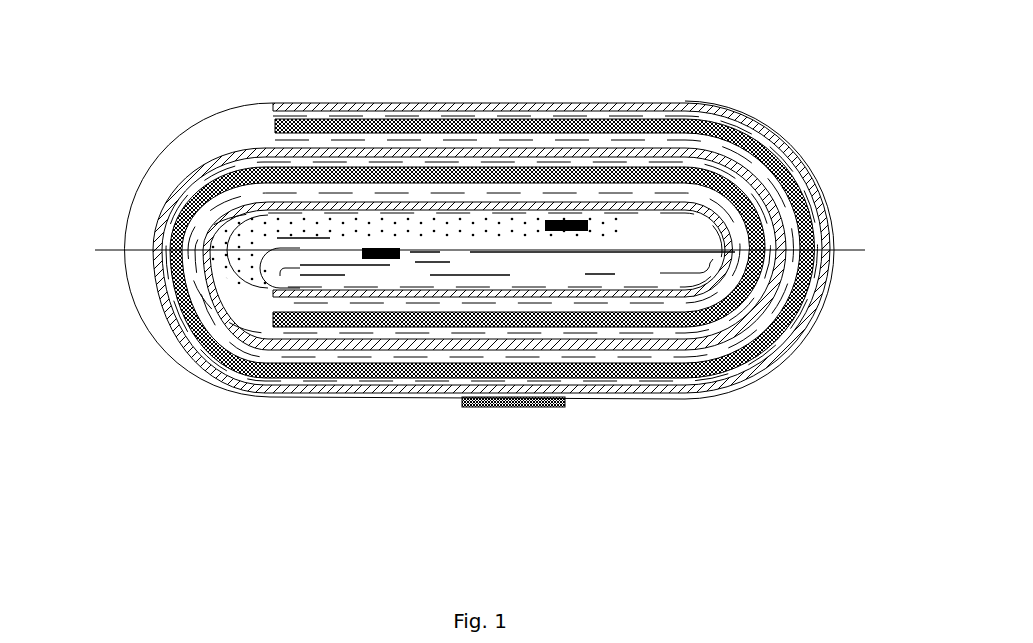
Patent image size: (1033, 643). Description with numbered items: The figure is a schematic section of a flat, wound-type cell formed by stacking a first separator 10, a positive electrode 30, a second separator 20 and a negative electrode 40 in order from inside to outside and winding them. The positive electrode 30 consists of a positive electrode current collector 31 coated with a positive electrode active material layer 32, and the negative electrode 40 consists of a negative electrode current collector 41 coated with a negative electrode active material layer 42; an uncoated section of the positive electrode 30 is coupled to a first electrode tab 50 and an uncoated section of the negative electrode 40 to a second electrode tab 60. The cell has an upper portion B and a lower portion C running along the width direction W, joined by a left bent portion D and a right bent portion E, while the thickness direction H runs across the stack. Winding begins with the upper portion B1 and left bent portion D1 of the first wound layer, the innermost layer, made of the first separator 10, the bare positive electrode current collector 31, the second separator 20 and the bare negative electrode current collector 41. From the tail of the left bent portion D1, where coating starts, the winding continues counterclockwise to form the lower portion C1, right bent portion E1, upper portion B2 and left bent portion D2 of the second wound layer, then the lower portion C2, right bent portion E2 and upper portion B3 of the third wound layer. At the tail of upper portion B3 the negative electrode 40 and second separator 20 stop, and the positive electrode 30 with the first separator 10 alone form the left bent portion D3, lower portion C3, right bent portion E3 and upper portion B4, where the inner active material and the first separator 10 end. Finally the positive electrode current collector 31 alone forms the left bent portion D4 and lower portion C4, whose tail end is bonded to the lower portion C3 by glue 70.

The first separator 10 is at (578, 216).
The second separator 20 is at (505, 206).
The positive electrode 30 is at (456, 213).
The positive electrode current collector 31 is at (300, 287).
The positive electrode active material layer 32 is at (320, 290).
The negative electrode 40 is at (511, 243).
The negative electrode current collector 41 is at (780, 148).
The negative electrode active material layer 42 is at (763, 268).
The first electrode tab 50 is at (370, 252).
The second electrode tab 60 is at (571, 233).
The glue 70 is at (510, 408).
The upper portion B is at (368, 41).
The upper portion of first wound layer B1 is at (408, 240).
The upper portion of second wound layer B2 is at (428, 192).
The upper portion of third wound layer B3 is at (468, 147).
The upper portion of fourth wound layer B4 is at (498, 107).
The lower portion C is at (340, 485).
The lower portion of first wound layer C1 is at (358, 301).
The lower portion of second wound layer C2 is at (394, 358).
The lower portion of third wound layer C3 is at (423, 383).
The lower portion of fourth wound layer C4 is at (458, 397).
The left bent portion D is at (80, 323).
The left bent portion of first wound layer D1 is at (265, 292).
The left bent portion of second wound layer D2 is at (197, 283).
The left bent portion of third wound layer D3 is at (158, 300).
The left bent portion of fourth wound layer D4 is at (137, 298).
The right bent portion E is at (890, 318).
The right bent portion of first wound layer E1 is at (712, 263).
The right bent portion of second wound layer E2 is at (775, 273).
The right bent portion of third wound layer E3 is at (812, 285).
The thickness direction H is at (920, 160).
The width direction W is at (594, 548).